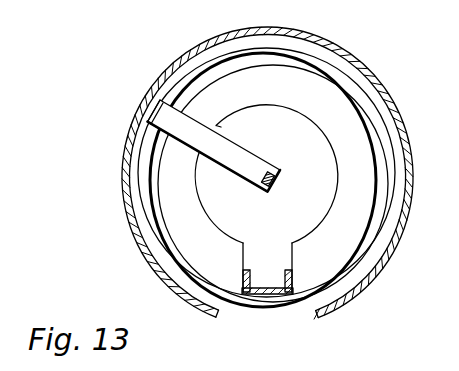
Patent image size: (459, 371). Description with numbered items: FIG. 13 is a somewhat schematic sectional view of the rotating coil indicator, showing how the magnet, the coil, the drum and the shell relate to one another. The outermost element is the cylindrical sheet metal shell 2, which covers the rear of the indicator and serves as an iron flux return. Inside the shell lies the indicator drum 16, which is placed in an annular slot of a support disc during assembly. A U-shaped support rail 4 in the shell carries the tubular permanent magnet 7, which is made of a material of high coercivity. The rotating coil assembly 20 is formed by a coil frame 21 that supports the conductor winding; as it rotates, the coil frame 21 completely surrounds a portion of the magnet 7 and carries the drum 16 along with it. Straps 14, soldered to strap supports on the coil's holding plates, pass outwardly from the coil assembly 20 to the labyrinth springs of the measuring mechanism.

The cylindrical sheet metal shell 2 is at (338, 312).
The indicator drum 16 is at (375, 110).
The tubular permanent magnet 7 is at (377, 162).
The support rail 4 is at (270, 295).
The rotating coil assembly 20 is at (263, 160).
The coil frame 21 is at (150, 112).
The straps 14 is at (273, 181).